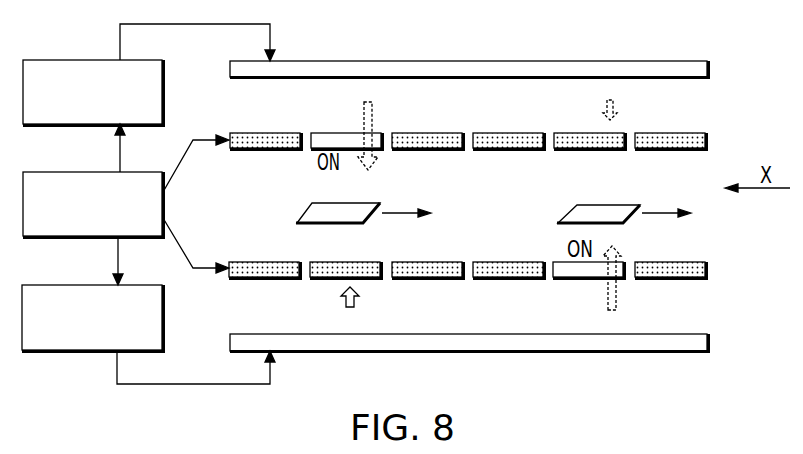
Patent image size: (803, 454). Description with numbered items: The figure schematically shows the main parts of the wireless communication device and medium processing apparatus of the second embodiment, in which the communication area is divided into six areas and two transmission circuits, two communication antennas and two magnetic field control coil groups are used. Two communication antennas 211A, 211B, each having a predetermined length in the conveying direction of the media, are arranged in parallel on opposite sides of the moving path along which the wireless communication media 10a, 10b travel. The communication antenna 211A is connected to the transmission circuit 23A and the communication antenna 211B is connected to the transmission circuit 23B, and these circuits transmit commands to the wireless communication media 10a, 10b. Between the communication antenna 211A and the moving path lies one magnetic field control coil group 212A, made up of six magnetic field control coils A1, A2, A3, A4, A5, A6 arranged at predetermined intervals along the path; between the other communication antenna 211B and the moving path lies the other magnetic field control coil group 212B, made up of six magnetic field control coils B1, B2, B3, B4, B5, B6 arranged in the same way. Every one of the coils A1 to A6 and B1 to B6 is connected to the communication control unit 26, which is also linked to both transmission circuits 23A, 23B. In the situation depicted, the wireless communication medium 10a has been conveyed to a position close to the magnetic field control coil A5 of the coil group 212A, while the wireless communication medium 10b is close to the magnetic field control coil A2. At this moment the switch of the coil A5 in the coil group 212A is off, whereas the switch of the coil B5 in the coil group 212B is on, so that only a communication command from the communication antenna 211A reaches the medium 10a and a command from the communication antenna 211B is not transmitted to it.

The transmission circuit 23B is at (48, 58).
The communication control unit 26 is at (62, 172).
The transmission circuit 23A is at (73, 285).
The communication antenna 211B is at (464, 61).
The communication antenna 211A is at (545, 352).
The magnetic field control coil group 212B is at (508, 117).
The magnetic field control coil group 212A is at (508, 290).
The wireless communication medium 10a is at (598, 212).
The wireless communication medium 10b is at (360, 209).
The magnetic field control coil B1 is at (259, 131).
The magnetic field control coil B2 is at (328, 131).
The magnetic field control coil B3 is at (425, 131).
The magnetic field control coil B4 is at (501, 131).
The magnetic field control coil B5 is at (576, 131).
The magnetic field control coil B6 is at (665, 131).
The magnetic field control coil A1 is at (260, 281).
The magnetic field control coil A2 is at (322, 281).
The magnetic field control coil A3 is at (427, 281).
The magnetic field control coil A4 is at (505, 281).
The magnetic field control coil A5 is at (578, 281).
The magnetic field control coil A6 is at (667, 281).